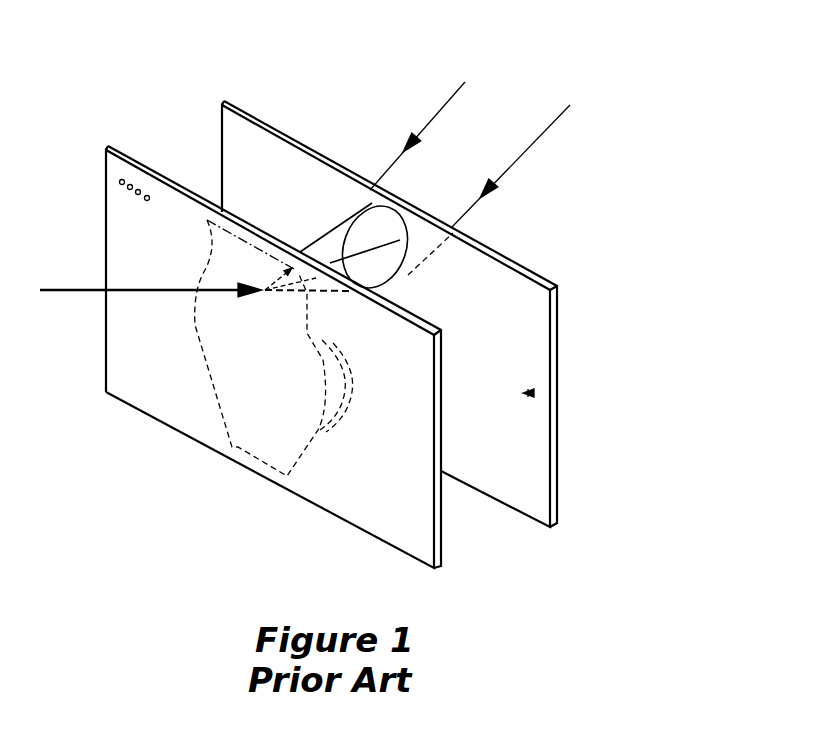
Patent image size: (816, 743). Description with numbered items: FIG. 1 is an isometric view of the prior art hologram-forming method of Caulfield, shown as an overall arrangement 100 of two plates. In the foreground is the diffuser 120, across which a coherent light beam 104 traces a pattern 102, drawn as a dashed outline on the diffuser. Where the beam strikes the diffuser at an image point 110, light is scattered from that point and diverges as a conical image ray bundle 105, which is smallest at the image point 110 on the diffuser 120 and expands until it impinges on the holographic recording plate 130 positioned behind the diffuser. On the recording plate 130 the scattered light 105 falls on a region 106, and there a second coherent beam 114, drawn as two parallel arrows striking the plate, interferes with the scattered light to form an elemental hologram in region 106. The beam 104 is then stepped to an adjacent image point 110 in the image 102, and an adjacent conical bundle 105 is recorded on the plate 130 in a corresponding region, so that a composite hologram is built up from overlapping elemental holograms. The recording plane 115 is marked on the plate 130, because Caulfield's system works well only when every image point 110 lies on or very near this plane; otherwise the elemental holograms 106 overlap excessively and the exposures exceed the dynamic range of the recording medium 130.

The holographic optical system 100 is at (120, 181).
The pattern 102 is at (238, 447).
The coherent light beam 104 is at (85, 292).
The conical image ray bundle 105 is at (325, 238).
The region 106 is at (370, 238).
The image point 110 is at (258, 292).
The coherent beam 114 is at (532, 143).
The recording plane 115 is at (530, 393).
The diffuser 120 is at (442, 540).
The holographic recording plate 130 is at (558, 495).